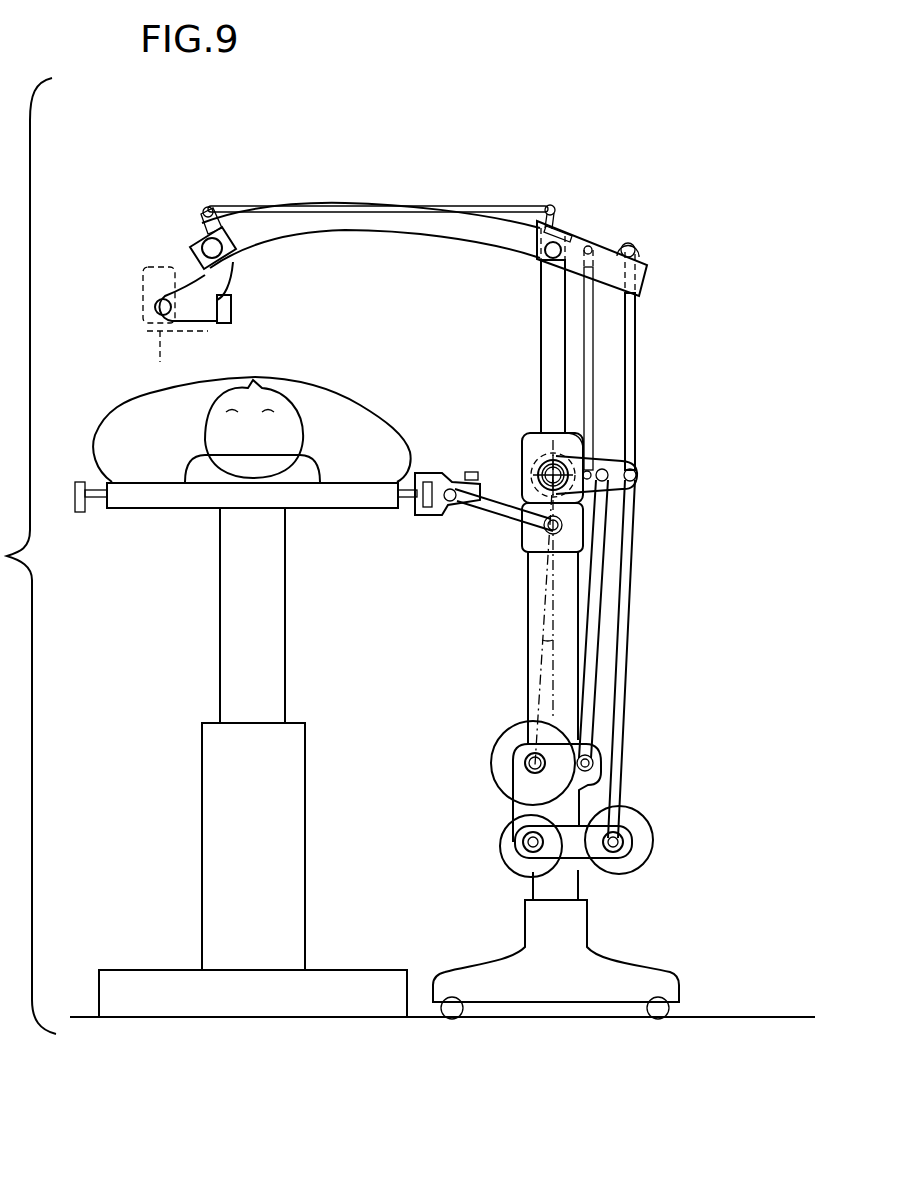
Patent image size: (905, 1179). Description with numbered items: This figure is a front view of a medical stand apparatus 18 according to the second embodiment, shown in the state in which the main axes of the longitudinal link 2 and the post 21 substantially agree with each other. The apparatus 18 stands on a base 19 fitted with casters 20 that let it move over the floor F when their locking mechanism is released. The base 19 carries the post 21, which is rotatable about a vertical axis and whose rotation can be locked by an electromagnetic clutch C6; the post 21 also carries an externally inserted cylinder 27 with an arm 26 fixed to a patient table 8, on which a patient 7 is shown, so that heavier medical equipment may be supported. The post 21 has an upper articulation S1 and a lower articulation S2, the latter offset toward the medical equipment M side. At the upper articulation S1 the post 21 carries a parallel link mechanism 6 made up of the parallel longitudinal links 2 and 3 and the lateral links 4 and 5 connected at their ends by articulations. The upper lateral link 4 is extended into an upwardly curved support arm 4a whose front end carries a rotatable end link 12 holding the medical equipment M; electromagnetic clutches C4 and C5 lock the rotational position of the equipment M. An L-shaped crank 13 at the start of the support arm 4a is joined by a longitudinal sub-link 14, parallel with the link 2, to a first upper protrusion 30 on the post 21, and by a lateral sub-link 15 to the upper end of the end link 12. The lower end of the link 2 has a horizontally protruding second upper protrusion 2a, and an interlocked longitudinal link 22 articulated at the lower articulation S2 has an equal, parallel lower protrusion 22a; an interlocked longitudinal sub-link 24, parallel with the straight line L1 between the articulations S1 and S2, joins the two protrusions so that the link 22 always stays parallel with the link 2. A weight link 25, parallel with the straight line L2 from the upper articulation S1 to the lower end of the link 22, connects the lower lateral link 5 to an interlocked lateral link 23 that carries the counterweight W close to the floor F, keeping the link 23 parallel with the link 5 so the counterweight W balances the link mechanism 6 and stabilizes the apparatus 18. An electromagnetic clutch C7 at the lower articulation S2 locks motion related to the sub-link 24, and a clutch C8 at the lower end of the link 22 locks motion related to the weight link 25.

The longitudinal link 2 is at (545, 352).
The second upper protrusion 2a is at (543, 428).
The longitudinal link 3 is at (636, 400).
The lateral link 4 is at (418, 224).
The support arm 4a is at (352, 204).
The lateral link 5 is at (610, 478).
The parallel link mechanism 6 is at (694, 372).
The patient 7 is at (130, 405).
The patient table 8 is at (350, 500).
The end link 12 is at (238, 270).
The L-shaped crank 13 is at (558, 226).
The longitudinal sub-link 14 is at (592, 360).
The lateral sub-link 15 is at (470, 205).
The stand apparatus 18 is at (451, 135).
The base 19 is at (632, 966).
The casters 20 is at (668, 1001).
The post 21 is at (528, 672).
The interlocked longitudinal link 22 is at (514, 800).
The lower protrusion 22a is at (575, 742).
The interlocked lateral link 23 is at (592, 868).
The interlocked longitudinal sub-link 24 is at (598, 625).
The weight link 25 is at (622, 672).
The arm 26 is at (480, 510).
The externally inserted cylinder 27 is at (522, 548).
The first upper protrusion 30 is at (530, 457).
The medical equipment M is at (143, 275).
The electromagnetic clutch C4 is at (158, 307).
The electromagnetic clutch C5 is at (232, 318).
The electromagnetic clutch C6 is at (522, 440).
The electromagnetic clutch C7 is at (510, 732).
The electromagnetic clutch C8 is at (520, 843).
The upper articulation S1 is at (575, 500).
The lower articulation S2 is at (524, 764).
The straight line L1 is at (540, 655).
The straight line L2 is at (525, 705).
The counterweight W is at (645, 855).
The floor F is at (773, 1015).